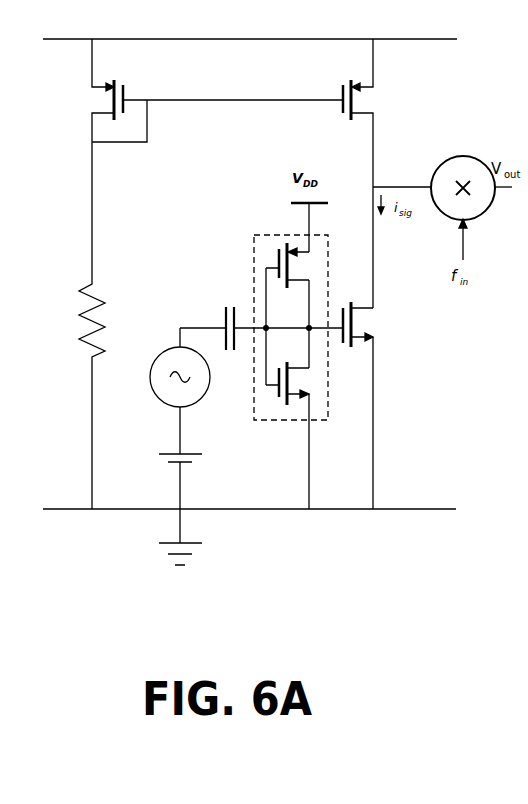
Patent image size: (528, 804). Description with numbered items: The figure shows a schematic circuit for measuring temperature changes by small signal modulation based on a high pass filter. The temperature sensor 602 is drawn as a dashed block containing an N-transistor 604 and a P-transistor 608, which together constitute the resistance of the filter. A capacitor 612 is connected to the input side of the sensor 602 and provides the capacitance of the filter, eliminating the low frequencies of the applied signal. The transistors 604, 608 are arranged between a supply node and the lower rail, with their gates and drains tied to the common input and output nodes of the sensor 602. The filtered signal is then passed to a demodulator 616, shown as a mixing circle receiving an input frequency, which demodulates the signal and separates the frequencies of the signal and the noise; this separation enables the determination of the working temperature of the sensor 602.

The temperature sensor 602 is at (262, 233).
The N-transistor 604 is at (278, 260).
The P-transistor 608 is at (278, 394).
The capacitor 612 is at (226, 317).
The demodulator 616 is at (458, 156).